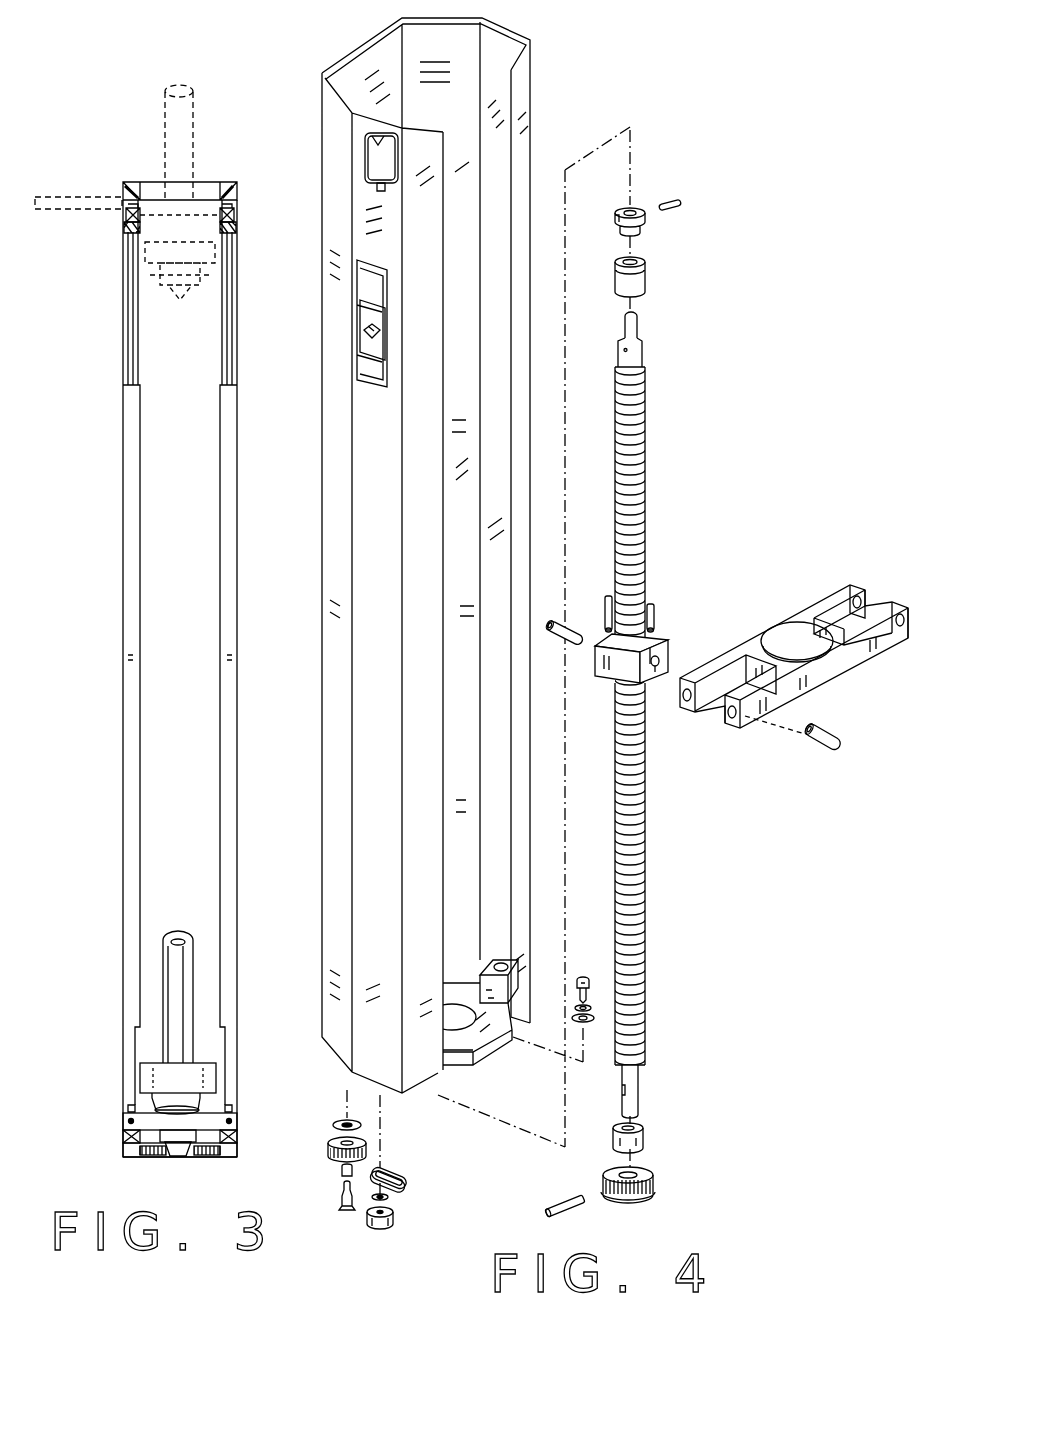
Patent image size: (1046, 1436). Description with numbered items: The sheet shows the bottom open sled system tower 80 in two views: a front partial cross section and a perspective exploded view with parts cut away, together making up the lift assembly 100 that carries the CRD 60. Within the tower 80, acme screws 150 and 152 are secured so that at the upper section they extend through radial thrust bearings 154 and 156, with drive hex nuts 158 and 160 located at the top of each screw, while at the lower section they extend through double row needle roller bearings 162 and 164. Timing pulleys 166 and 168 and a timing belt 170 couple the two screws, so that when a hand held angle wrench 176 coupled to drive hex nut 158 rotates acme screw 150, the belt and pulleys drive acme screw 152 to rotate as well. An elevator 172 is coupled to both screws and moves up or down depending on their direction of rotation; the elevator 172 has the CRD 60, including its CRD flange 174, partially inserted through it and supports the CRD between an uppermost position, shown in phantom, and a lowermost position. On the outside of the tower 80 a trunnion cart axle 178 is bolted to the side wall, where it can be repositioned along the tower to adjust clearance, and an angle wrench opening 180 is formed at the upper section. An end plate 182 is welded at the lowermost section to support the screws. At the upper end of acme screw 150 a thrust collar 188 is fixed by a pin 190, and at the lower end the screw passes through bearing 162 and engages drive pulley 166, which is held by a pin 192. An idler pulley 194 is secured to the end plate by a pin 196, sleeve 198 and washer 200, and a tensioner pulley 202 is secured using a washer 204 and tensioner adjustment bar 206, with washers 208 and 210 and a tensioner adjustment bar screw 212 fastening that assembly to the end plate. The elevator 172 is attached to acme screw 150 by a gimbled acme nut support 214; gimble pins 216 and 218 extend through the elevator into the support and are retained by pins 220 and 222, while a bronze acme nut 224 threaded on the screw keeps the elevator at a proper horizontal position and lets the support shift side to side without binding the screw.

In FIG. 3, the CRD 60 is at (165, 112).
In FIG. 3, the BOS system tower 80 is at (118, 693).
In FIG. 4, the BOS system tower 80 is at (316, 148).
In FIG. 3, the lift assembly 100 is at (170, 585).
In FIG. 3, the acme screw 150 is at (128, 325).
In FIG. 4, the acme screw 150 is at (645, 465).
In FIG. 3, the acme screw 152 is at (228, 305).
In FIG. 3, the radial thrust bearing 154 is at (126, 238).
In FIG. 3, the radial thrust bearing 156 is at (236, 232).
In FIG. 3, the drive hex nut 158 is at (126, 222).
In FIG. 3, the drive hex nut 160 is at (232, 213).
In FIG. 3, the double row needle roller bearing 162 is at (122, 1130).
In FIG. 4, the double row needle roller bearing 162 is at (645, 1138).
In FIG. 3, the double row needle roller bearing 164 is at (226, 1140).
In FIG. 3, the timing pulley 166 is at (122, 1150).
In FIG. 4, the timing pulley 166 is at (655, 1192).
In FIG. 3, the timing pulley 168 is at (219, 1160).
In FIG. 3, the timing belt 170 is at (150, 1160).
In FIG. 3, the elevator 172 is at (196, 1122).
In FIG. 4, the elevator 172 is at (820, 606).
In FIG. 3, the CRD flange 174 is at (160, 1078).
In FIG. 3, the hand held angle wrench 176 is at (63, 196).
In FIG. 4, the trunnion cart axle 178 is at (358, 335).
In FIG. 4, the angle wrench opening 180 is at (378, 112).
In FIG. 4, the end plate 182 is at (505, 1040).
In FIG. 4, the thrust collar 188 is at (645, 222).
In FIG. 4, the pin 190 is at (670, 200).
In FIG. 4, the pin 192 is at (548, 1205).
In FIG. 4, the idler pulley 194 is at (328, 1142).
In FIG. 4, the pin 196 is at (344, 1212).
In FIG. 4, the sleeve 198 is at (338, 1170).
In FIG. 4, the washer 200 is at (335, 1115).
In FIG. 4, the tensioner pulley 202 is at (386, 1228).
In FIG. 4, the washer 204 is at (392, 1197).
In FIG. 4, the tensioner adjustment bar 206 is at (405, 1182).
In FIG. 4, the washer 208 is at (594, 1020).
In FIG. 4, the washer 210 is at (592, 1008).
In FIG. 4, the tensioner adjustment bar screw 212 is at (592, 985).
In FIG. 4, the gimbled acme nut support 214 is at (640, 650).
In FIG. 4, the gimble pin 216 is at (822, 752).
In FIG. 4, the gimble pin 218 is at (575, 625).
In FIG. 4, the pin 220 is at (651, 604).
In FIG. 4, the pin 222 is at (610, 596).
In FIG. 4, the bronze acme nut 224 is at (645, 283).